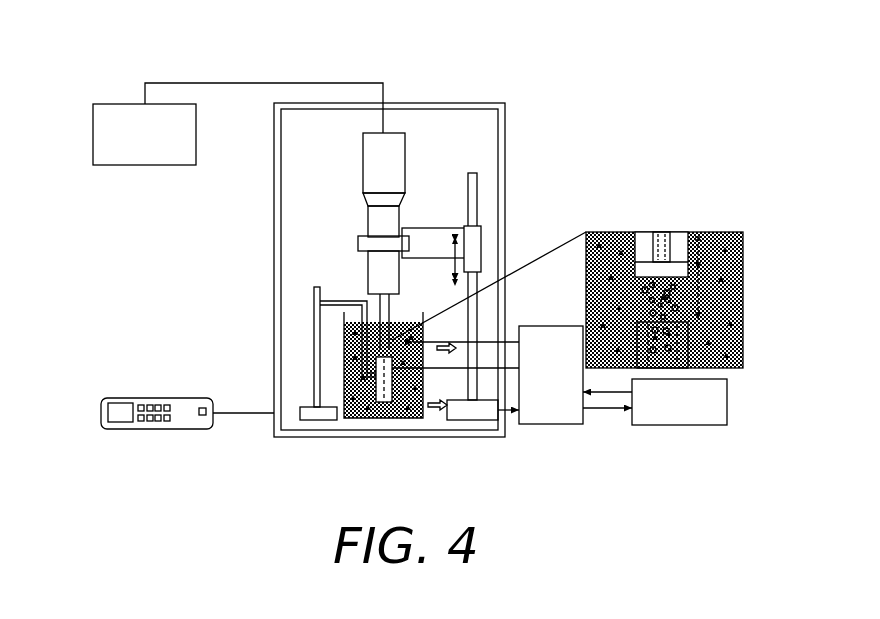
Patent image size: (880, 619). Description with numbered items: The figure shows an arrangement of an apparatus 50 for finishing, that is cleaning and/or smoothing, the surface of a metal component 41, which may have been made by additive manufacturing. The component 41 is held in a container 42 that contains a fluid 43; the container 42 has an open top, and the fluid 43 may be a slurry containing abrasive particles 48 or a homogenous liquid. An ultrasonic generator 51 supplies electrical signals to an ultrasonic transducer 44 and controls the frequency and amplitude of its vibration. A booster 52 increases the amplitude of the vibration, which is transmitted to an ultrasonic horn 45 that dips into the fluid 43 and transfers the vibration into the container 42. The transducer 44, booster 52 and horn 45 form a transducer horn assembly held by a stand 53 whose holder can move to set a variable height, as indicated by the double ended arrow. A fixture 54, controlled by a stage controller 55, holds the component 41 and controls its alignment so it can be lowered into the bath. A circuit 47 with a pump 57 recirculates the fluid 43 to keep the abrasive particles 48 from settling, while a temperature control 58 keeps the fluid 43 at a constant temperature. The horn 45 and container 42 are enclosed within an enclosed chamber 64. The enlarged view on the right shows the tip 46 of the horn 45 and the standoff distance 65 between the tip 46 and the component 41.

The apparatus 50 is at (582, 42).
The enclosed chamber 64 is at (452, 103).
The ultrasonic generator 51 is at (117, 104).
The ultrasonic transducer 44 is at (358, 180).
The booster 52 is at (365, 258).
The ultrasonic horn 45 is at (368, 302).
The stand 53 is at (483, 240).
The fixture 54 is at (310, 335).
The container 42 is at (363, 419).
The metal component 41 is at (380, 403).
The fluid 43 is at (350, 370).
The tip 46 is at (678, 257).
The abrasive particles 48 is at (725, 250).
The standoff distance 65 is at (700, 300).
The pump 57 is at (560, 417).
The temperature control 58 is at (681, 413).
The stage controller 55 is at (140, 398).
The circuit 47 is at (479, 460).